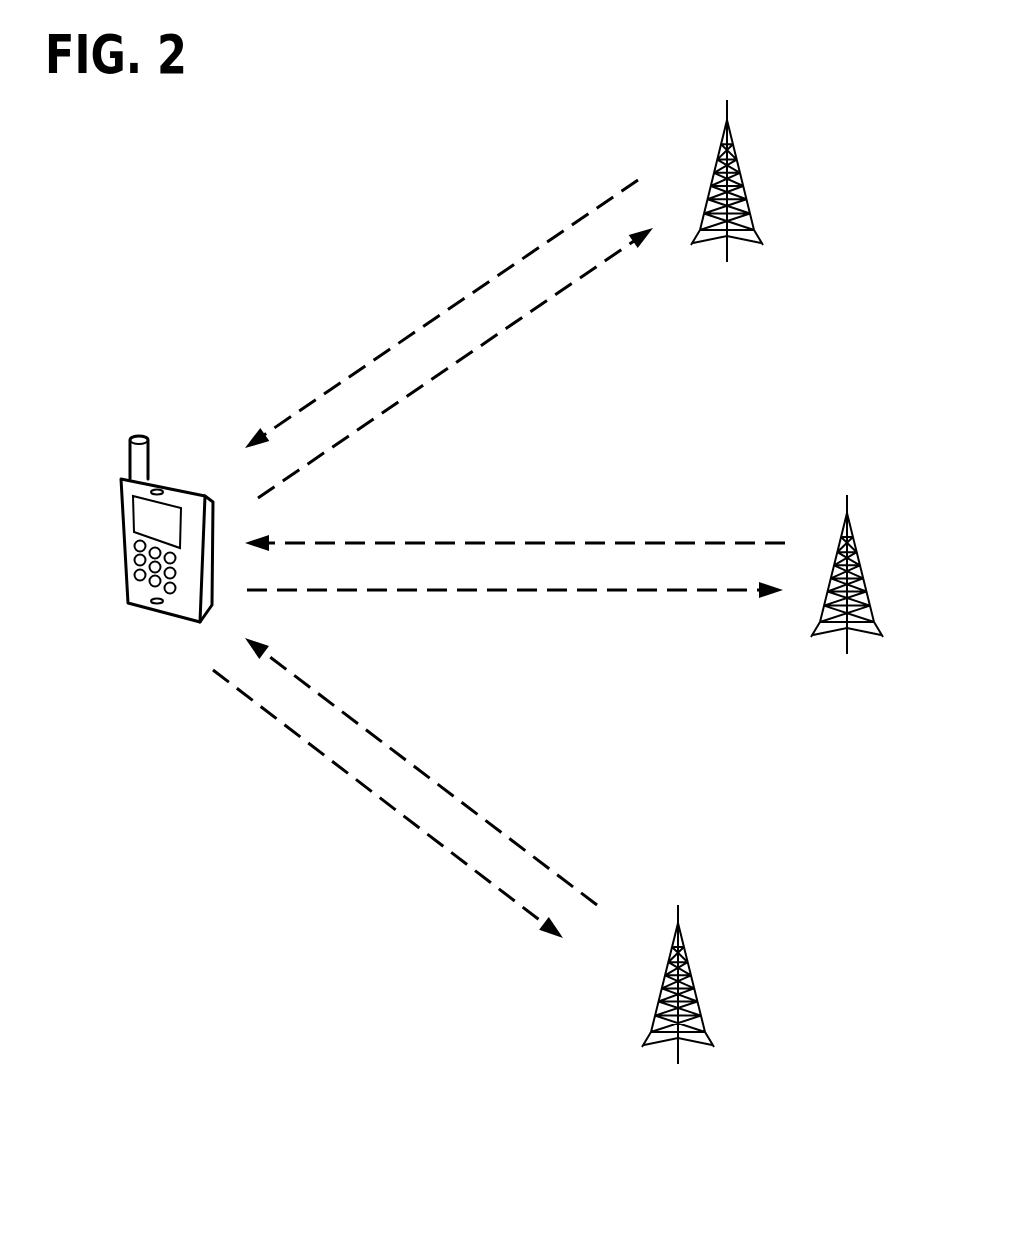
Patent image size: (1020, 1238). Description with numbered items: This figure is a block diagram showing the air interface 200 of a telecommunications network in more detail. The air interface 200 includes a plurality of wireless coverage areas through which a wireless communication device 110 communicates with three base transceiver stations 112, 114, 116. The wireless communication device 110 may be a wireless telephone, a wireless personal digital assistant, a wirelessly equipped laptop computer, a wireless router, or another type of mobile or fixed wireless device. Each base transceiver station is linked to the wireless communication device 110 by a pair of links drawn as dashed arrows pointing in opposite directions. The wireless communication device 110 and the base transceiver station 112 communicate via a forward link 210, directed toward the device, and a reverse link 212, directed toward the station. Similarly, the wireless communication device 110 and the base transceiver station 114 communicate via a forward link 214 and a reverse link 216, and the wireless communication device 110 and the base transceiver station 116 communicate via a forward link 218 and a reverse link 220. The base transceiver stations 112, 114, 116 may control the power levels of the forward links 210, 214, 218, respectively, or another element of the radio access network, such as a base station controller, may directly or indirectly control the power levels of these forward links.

The air interface 200 is at (376, 99).
The wireless communication device 110 is at (126, 470).
The base transceiver station 112 is at (720, 157).
The base transceiver station 114 is at (846, 528).
The base transceiver station 116 is at (660, 998).
The forward link 210 is at (458, 304).
The reverse link 212 is at (478, 348).
The forward link 214 is at (594, 543).
The reverse link 216 is at (593, 590).
The forward link 218 is at (478, 820).
The reverse link 220 is at (422, 831).